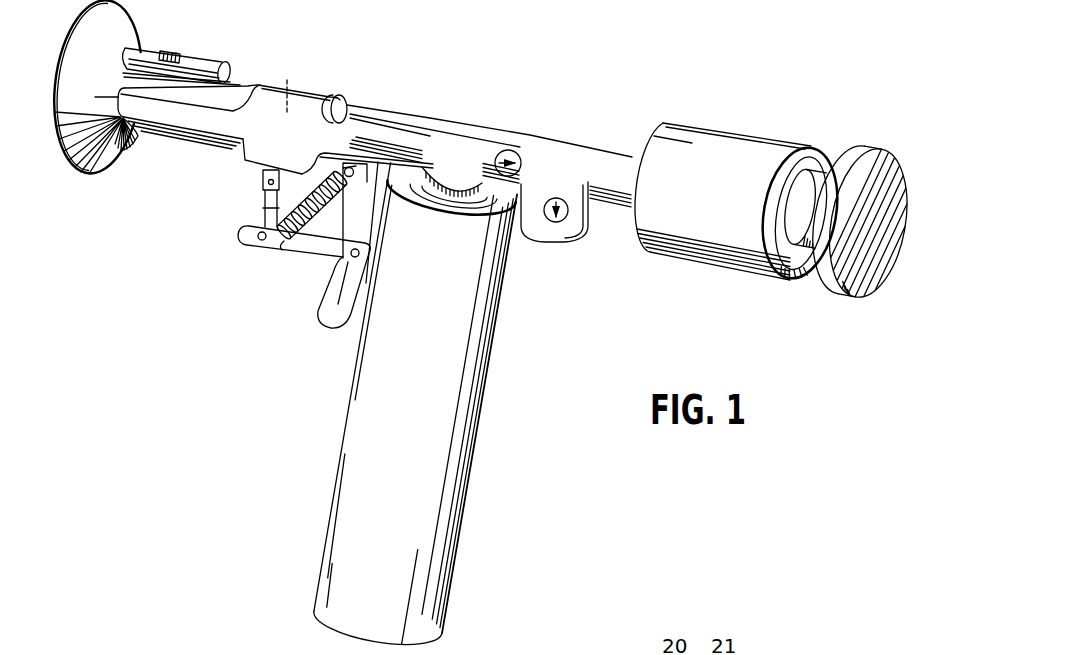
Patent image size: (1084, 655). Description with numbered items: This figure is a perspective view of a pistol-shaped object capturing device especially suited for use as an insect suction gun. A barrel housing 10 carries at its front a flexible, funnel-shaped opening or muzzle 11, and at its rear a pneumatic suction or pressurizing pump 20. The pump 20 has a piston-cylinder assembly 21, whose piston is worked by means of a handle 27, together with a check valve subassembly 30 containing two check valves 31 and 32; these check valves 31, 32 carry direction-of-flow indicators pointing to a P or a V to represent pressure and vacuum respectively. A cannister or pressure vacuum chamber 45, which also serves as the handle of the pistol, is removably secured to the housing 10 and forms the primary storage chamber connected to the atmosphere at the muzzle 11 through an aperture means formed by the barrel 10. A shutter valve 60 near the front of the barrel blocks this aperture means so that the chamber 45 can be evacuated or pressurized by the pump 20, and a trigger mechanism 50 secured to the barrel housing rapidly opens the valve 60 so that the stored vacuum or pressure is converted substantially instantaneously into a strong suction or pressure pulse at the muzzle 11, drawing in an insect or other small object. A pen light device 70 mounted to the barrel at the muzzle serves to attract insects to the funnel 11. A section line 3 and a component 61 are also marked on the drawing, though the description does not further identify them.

The section line 3- 3 is at (312, 75).
The barrel housing 10 is at (466, 102).
The funnel shaped opening or muzzle 11 is at (93, 172).
The pneumatic suction or pressurizing pump 20 is at (677, 92).
The piston-cylinder assembly 21 is at (766, 128).
The handle 27 is at (896, 205).
The check valve subassembly 30 is at (578, 137).
The check valve 31 is at (512, 150).
The check valve 32 is at (572, 217).
The cannister or pressure vacuum chamber 45 is at (460, 522).
The trigger mechanism 50 is at (313, 265).
The shutter valve 60 is at (253, 163).
The trigger rod 61 is at (258, 177).
The pen light device 70 is at (201, 52).